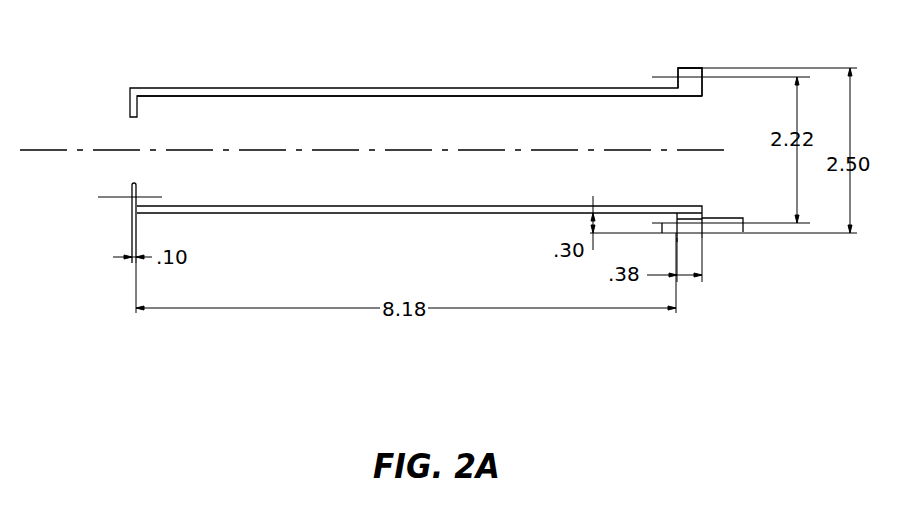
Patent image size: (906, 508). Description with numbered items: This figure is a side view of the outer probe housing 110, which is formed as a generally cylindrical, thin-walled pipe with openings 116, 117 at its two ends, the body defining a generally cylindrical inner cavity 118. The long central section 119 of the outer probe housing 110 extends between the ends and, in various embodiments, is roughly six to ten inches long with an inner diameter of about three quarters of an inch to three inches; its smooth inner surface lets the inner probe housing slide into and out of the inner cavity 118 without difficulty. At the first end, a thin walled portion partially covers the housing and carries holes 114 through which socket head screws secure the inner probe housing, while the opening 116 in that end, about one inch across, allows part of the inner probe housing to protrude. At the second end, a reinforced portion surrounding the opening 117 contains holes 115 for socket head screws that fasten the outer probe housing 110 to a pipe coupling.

The outer probe housing 110 is at (512, 86).
The holes 114 is at (128, 203).
The holes 115 is at (710, 233).
The opening 116 is at (133, 158).
The opening 117 is at (700, 131).
The inner cavity 118 is at (337, 131).
The central section 119 is at (136, 350).